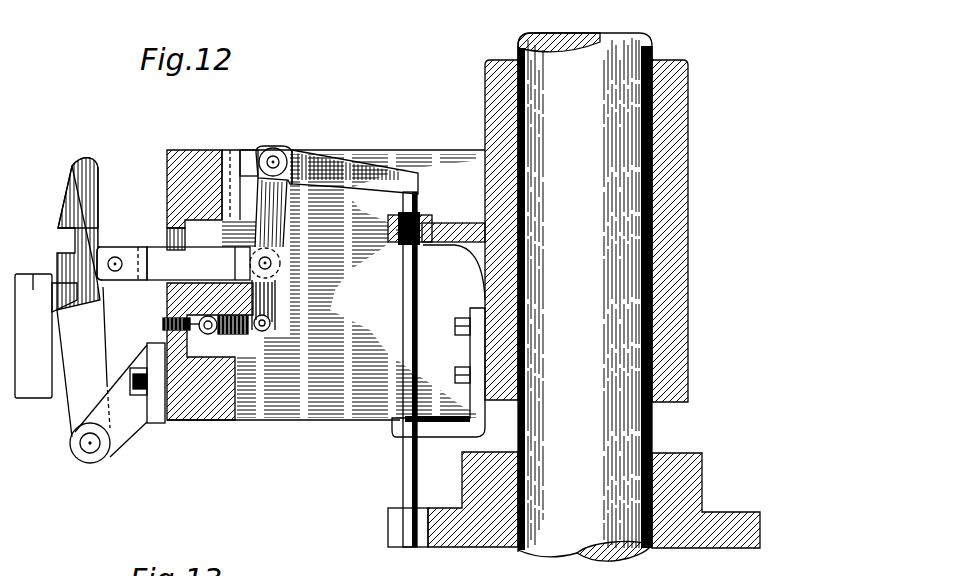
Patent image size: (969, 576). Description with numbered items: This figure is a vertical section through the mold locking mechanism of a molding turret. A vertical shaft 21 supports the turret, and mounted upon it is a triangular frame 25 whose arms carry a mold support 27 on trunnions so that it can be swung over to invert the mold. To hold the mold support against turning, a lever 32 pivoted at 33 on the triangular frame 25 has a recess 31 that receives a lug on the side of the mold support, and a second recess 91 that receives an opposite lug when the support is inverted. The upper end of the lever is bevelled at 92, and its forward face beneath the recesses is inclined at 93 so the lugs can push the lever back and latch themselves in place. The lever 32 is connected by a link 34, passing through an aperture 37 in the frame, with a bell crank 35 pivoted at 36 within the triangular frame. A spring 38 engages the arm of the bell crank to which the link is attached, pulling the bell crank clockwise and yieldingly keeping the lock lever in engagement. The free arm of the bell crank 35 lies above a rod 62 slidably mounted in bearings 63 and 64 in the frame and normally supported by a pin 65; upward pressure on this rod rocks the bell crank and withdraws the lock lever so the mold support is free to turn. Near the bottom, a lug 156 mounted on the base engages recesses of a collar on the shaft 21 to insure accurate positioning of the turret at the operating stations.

The vertical shaft 21 is at (585, 423).
The triangular frame 25 is at (185, 152).
The mold support 27 is at (33, 274).
The recess 31 is at (78, 238).
The lever 32 is at (72, 360).
The pivot 33 is at (88, 446).
The link 34 is at (213, 263).
The bell crank 35 is at (312, 162).
The pivot 36 is at (274, 160).
The aperture 37 is at (170, 232).
The spring 38 is at (235, 328).
The rod 62 is at (412, 192).
The bearing 63 is at (446, 224).
The bearing 64 is at (460, 432).
The pin 65 is at (393, 425).
The recess 91 is at (72, 304).
The bevelled end 92 is at (75, 172).
The inclined face 93 is at (65, 393).
The lug 156 is at (487, 536).